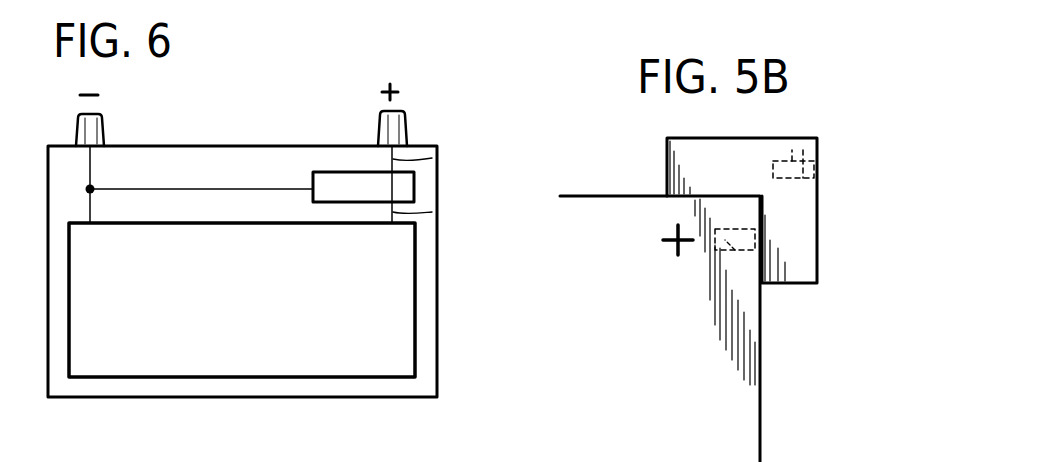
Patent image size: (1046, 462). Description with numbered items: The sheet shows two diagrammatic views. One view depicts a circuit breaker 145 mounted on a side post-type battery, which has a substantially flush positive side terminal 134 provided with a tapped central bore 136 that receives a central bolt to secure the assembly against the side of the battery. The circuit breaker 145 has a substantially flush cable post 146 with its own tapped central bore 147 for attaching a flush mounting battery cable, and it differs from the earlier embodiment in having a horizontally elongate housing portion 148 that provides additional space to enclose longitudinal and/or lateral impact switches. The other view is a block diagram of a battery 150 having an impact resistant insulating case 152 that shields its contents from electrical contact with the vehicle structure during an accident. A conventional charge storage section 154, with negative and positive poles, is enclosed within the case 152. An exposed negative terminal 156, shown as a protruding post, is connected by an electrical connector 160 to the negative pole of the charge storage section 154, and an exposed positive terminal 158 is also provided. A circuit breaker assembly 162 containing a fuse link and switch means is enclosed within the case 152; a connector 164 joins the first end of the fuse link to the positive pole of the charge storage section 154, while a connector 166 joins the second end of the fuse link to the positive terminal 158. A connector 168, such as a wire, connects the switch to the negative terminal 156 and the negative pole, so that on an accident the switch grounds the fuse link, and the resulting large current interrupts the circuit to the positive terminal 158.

In FIG. 5B, the flush terminal 134 is at (757, 247).
In FIG. 5B, the tapped central bore 136 is at (735, 252).
In FIG. 5B, the circuit breaker 145 is at (822, 229).
In FIG. 5B, the flush cable post 146 is at (818, 167).
In FIG. 5B, the tapped central bore 147 is at (792, 150).
In FIG. 5B, the horizontally elongate housing portion 148 is at (737, 175).
In FIG. 6, the battery 150 is at (448, 265).
In FIG. 6, the impact resistant insulating case 152 is at (437, 302).
In FIG. 6, the charge storage section 154 is at (343, 377).
In FIG. 6, the negative terminal 156 is at (103, 128).
In FIG. 6, the positive terminal 158 is at (405, 130).
In FIG. 6, the electrical connector 160 is at (92, 172).
In FIG. 6, the circuit breaker assembly 162 is at (332, 172).
In FIG. 6, the connector 164 is at (432, 212).
In FIG. 6, the connector 166 is at (432, 158).
In FIG. 6, the connector 168 is at (228, 189).